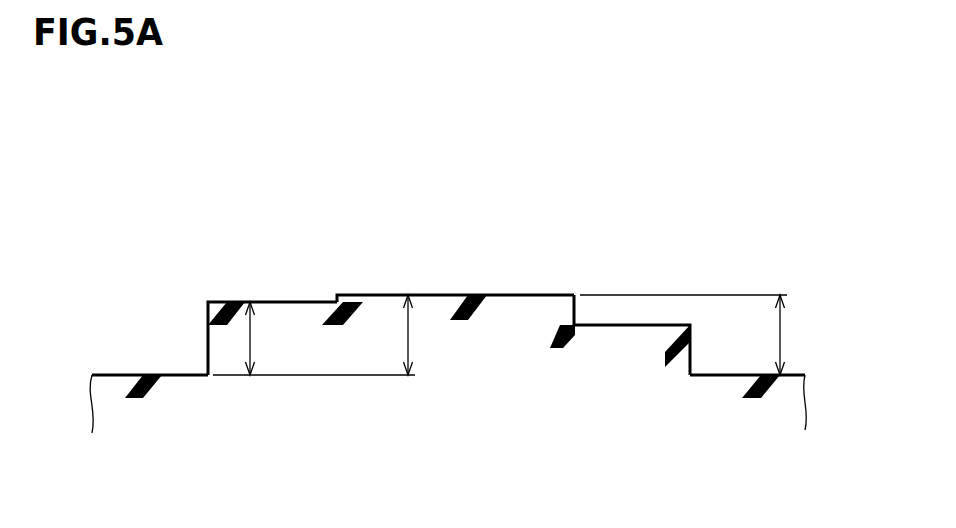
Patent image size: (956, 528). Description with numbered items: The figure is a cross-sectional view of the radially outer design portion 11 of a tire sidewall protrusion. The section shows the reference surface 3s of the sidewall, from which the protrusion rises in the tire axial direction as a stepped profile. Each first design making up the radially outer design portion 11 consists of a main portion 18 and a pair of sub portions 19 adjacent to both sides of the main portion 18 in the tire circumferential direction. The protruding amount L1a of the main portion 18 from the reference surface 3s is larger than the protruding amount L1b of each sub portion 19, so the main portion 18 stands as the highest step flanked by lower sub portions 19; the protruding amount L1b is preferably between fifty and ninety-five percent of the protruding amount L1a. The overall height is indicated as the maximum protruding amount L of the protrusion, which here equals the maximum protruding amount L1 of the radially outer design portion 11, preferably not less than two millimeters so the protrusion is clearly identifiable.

The radially outer design portion 11 is at (702, 215).
The reference surface 3s is at (135, 375).
The sub portion 19 is at (275, 275).
The main portion 18 is at (447, 275).
The protruding amount of sub portion L1b is at (252, 338).
The protruding amount of main portion L1a is at (410, 335).
The maximum protruding amount of protrusion L is at (712, 335).
The maximum protruding amount of radially outer design portion L1 is at (712, 335).